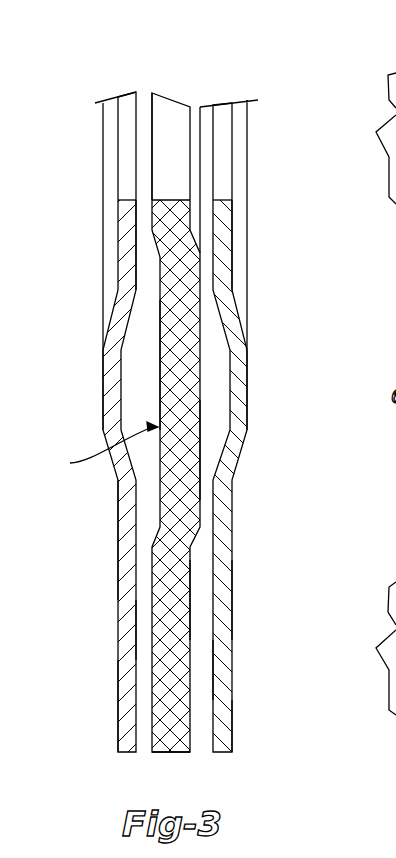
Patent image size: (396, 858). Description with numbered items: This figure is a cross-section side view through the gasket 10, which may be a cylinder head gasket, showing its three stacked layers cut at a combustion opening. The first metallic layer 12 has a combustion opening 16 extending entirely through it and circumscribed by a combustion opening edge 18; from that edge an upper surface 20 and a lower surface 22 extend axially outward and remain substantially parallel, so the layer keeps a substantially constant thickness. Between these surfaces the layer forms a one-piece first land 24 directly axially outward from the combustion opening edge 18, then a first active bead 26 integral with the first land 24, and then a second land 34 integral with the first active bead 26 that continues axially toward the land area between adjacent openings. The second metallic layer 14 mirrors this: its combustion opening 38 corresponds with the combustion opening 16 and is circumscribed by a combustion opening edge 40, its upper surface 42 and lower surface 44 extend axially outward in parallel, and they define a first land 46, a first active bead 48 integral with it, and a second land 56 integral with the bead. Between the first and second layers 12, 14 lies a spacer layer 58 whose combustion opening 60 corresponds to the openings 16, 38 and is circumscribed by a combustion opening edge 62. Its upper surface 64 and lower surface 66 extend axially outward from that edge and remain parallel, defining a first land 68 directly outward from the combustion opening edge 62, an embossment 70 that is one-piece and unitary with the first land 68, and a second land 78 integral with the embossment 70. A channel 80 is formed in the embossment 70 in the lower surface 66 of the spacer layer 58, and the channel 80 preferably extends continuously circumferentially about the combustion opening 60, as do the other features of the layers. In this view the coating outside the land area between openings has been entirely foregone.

The gasket 10 is at (258, 53).
The first metallic layer 12 is at (223, 263).
The second metallic layer 14 is at (123, 262).
The combustion opening 16 is at (223, 148).
The combustion opening edge 18 is at (222, 200).
The upper surface 20 is at (232, 618).
The lower surface 22 is at (213, 655).
The first land 24 is at (225, 240).
The first active bead 26 is at (242, 387).
The second land 34 is at (223, 687).
The combustion opening 38 is at (123, 158).
The combustion opening edge 40 is at (130, 200).
The upper surface 42 is at (135, 630).
The lower surface 44 is at (117, 683).
The first land 46 is at (127, 227).
The first active bead 48 is at (100, 395).
The second land 56 is at (123, 570).
The spacer layer 58 is at (173, 752).
The combustion opening 60 is at (167, 110).
The combustion opening edge 62 is at (170, 200).
The upper surface 64 is at (203, 367).
The lower surface 66 is at (158, 363).
The first land 68 is at (193, 217).
The embossment 70 is at (187, 455).
The second land 78 is at (173, 578).
The channel 80 is at (105, 448).